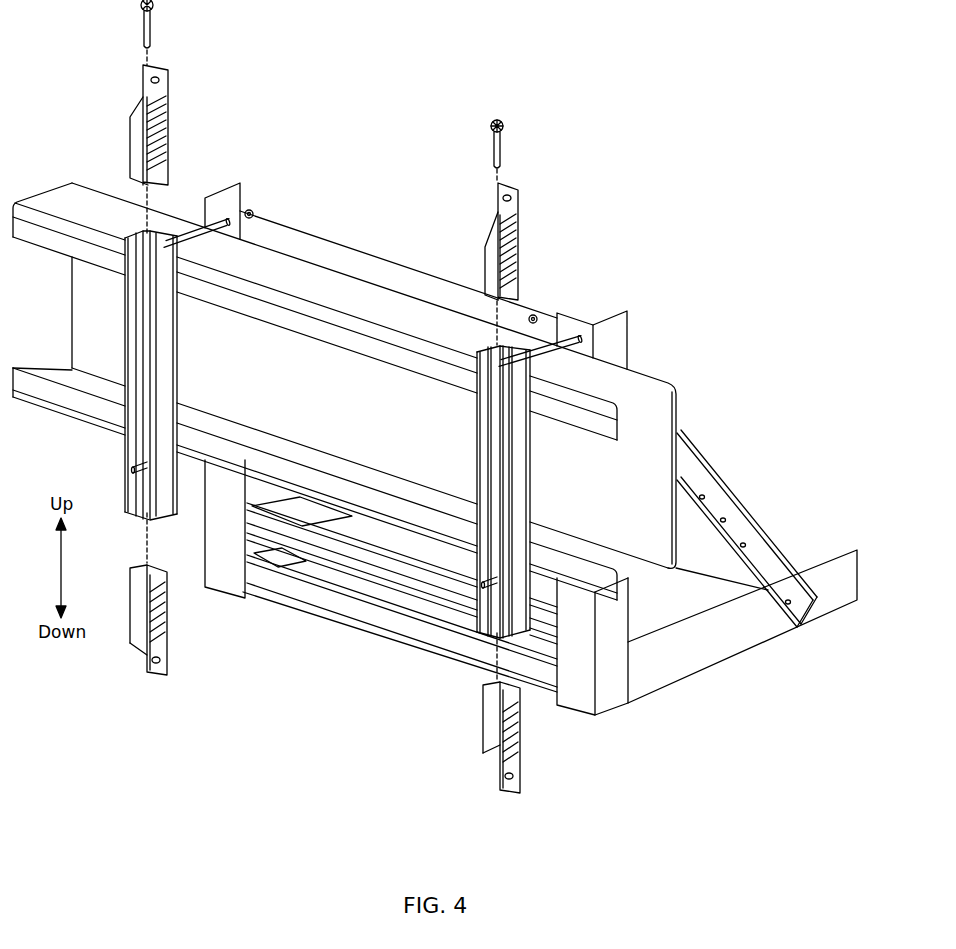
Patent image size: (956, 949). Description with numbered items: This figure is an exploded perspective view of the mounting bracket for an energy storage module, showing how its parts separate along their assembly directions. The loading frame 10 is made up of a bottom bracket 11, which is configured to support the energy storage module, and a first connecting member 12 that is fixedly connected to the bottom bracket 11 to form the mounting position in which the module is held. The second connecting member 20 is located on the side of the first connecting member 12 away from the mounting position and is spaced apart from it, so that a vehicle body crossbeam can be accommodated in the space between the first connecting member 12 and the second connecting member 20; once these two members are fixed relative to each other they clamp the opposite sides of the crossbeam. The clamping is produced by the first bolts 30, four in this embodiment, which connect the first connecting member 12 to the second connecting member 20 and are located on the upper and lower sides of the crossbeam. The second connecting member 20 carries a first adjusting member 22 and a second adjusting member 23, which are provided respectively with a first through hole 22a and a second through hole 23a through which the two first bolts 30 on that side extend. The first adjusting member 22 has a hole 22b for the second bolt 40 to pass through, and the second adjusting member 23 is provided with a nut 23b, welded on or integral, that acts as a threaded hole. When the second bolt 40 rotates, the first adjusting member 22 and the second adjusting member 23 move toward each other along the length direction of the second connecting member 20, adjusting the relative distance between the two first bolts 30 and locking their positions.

The loading frame 10 is at (753, 663).
The bottom bracket 11 is at (662, 665).
The first connecting member 12 is at (613, 338).
The second connecting member 20 is at (532, 479).
The first adjusting member 22 is at (516, 241).
The first through hole 22a is at (513, 197).
The hole 22b is at (494, 293).
The second adjusting member 23 is at (518, 736).
The second through hole 23a is at (520, 780).
The nut 23b is at (495, 690).
The first bolts 30 is at (548, 336).
The second bolt 40 is at (507, 140).